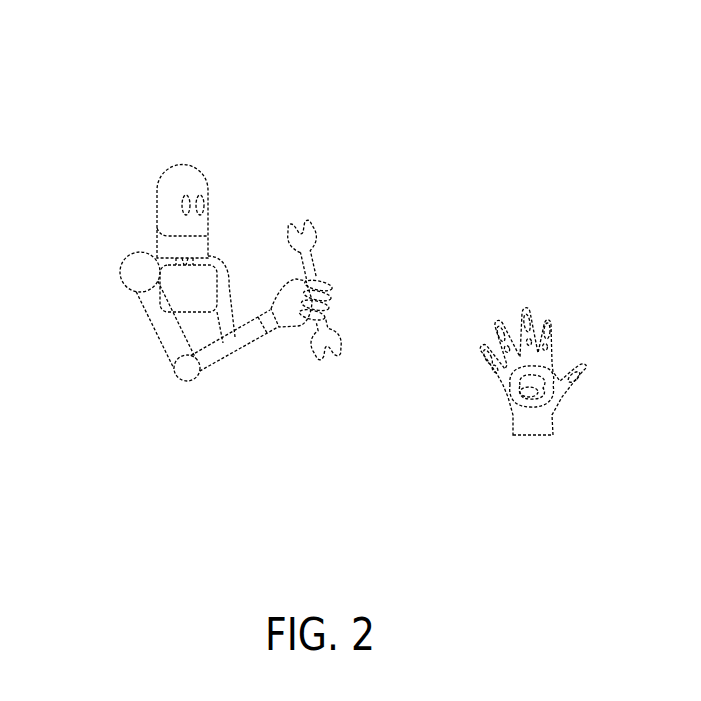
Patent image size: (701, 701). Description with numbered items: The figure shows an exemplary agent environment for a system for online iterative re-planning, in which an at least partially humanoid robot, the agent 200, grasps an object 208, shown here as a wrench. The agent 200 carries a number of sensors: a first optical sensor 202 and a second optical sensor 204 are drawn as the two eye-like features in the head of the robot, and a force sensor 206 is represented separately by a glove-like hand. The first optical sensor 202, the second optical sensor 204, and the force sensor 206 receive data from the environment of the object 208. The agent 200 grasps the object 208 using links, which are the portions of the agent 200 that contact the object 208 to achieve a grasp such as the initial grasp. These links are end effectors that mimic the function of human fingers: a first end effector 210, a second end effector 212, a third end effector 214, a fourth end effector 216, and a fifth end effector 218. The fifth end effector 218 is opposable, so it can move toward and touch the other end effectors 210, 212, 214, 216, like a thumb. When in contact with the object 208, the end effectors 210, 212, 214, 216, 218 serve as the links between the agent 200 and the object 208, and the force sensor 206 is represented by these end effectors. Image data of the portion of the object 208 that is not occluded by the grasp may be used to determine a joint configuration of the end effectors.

The agent 200 is at (106, 56).
The first optical sensor 202 is at (186, 195).
The second optical sensor 204 is at (201, 195).
The force sensor 206 is at (562, 412).
The object 208 is at (317, 228).
The first end effector 210 is at (483, 347).
The second end effector 212 is at (500, 320).
The third end effector 214 is at (525, 310).
The fourth end effector 216 is at (548, 317).
The fifth end effector 218 is at (582, 372).